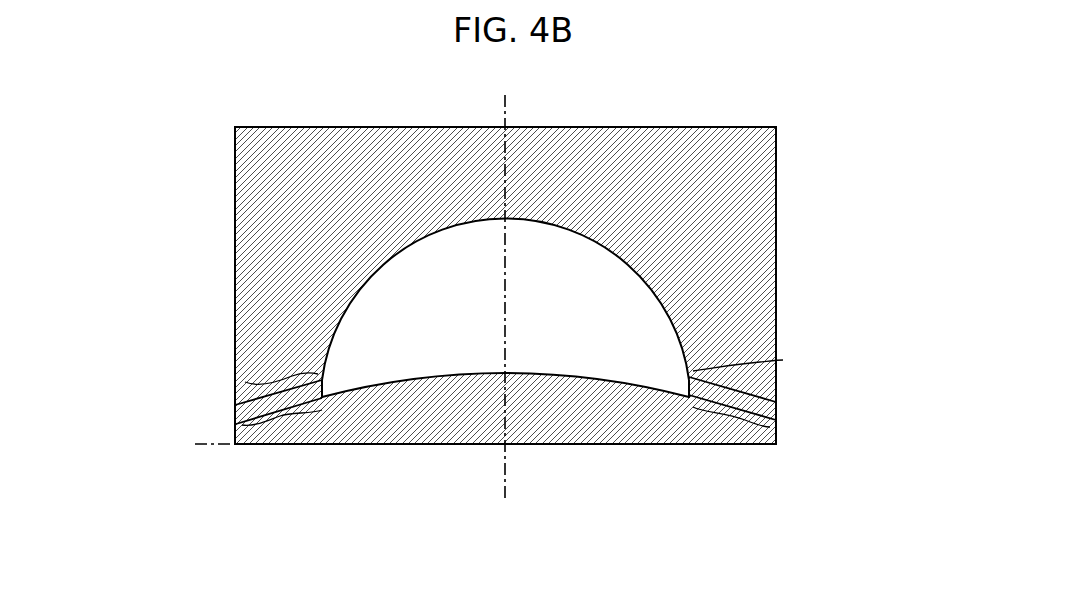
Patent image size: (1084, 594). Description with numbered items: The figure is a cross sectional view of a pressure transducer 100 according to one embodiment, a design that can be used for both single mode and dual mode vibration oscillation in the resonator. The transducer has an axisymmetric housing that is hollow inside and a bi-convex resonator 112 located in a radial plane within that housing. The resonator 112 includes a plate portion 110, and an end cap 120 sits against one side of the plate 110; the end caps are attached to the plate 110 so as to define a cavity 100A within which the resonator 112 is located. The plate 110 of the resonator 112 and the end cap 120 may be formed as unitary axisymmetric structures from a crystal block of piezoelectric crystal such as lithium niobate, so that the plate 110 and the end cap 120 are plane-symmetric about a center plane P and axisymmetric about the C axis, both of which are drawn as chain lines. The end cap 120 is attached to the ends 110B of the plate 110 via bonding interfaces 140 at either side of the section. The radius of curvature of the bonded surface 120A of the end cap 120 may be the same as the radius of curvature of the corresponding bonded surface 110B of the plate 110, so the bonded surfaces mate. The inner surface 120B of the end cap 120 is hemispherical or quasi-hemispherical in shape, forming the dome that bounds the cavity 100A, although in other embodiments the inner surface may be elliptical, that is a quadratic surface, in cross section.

The pressure transducer 100 is at (799, 175).
The cavity 100A is at (549, 250).
The plate portion 110 is at (775, 430).
The ends of plate 110B is at (278, 423).
The bi-convex resonator 112 is at (398, 420).
The end cap 120 is at (777, 258).
The bonded surface of end cap 120A is at (268, 385).
The inner surface of end cap 120B is at (420, 254).
The bonding interface 140 is at (250, 410).
The C axis C is at (505, 495).
The center plane P is at (788, 445).